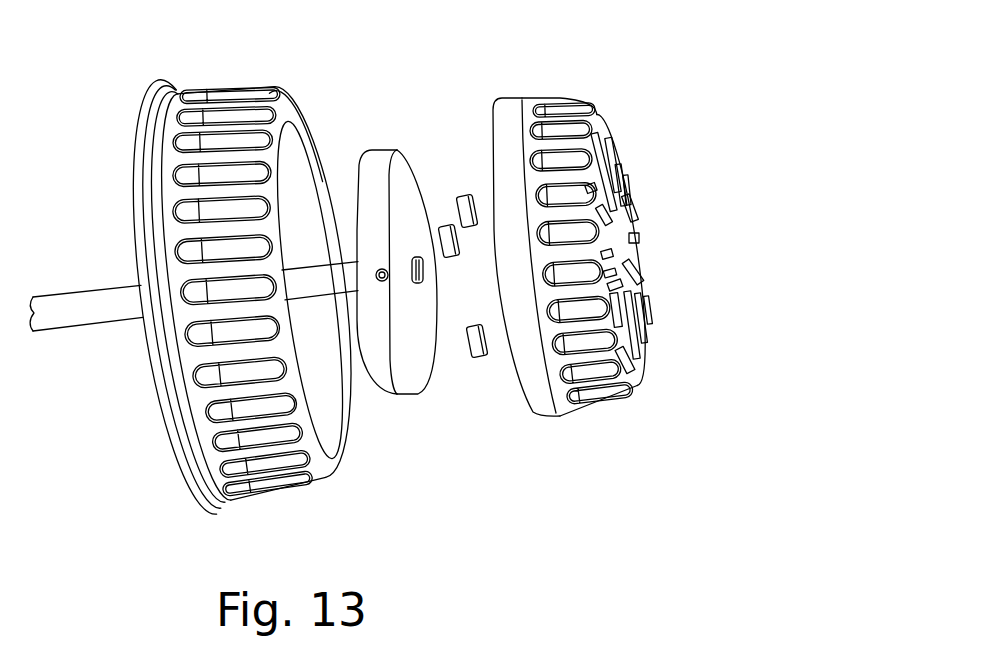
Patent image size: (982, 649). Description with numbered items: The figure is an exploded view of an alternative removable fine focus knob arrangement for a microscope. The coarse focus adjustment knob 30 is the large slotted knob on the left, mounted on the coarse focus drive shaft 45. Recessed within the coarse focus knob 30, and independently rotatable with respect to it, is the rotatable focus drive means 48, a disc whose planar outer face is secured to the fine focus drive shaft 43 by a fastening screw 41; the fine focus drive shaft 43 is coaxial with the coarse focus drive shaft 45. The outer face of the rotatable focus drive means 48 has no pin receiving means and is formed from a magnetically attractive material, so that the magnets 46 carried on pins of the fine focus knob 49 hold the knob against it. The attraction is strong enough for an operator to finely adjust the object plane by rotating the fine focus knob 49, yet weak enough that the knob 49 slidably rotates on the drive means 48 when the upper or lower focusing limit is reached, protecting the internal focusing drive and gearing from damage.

The coarse focus adjustment knob 30 is at (178, 128).
The fastening screw 41 is at (396, 394).
The fine focus drive shaft 43 is at (333, 277).
The coarse focus drive shaft 45 is at (105, 305).
The magnets 46 is at (446, 258).
The rotatable focus drive means 48 is at (400, 203).
The fine focus knob 49 is at (549, 388).